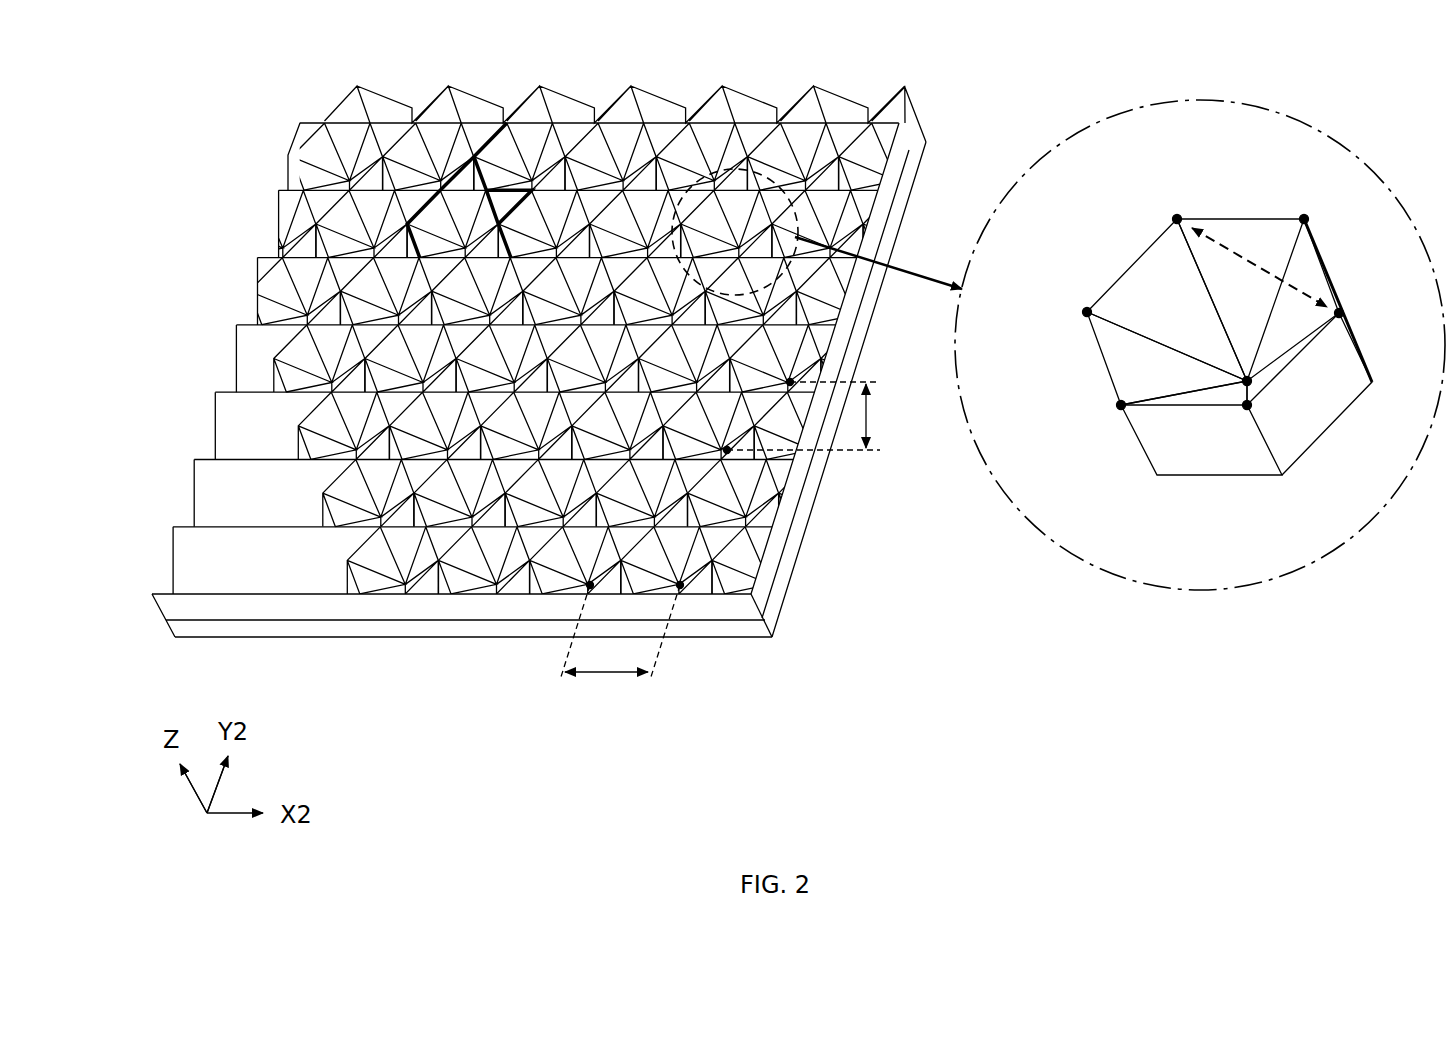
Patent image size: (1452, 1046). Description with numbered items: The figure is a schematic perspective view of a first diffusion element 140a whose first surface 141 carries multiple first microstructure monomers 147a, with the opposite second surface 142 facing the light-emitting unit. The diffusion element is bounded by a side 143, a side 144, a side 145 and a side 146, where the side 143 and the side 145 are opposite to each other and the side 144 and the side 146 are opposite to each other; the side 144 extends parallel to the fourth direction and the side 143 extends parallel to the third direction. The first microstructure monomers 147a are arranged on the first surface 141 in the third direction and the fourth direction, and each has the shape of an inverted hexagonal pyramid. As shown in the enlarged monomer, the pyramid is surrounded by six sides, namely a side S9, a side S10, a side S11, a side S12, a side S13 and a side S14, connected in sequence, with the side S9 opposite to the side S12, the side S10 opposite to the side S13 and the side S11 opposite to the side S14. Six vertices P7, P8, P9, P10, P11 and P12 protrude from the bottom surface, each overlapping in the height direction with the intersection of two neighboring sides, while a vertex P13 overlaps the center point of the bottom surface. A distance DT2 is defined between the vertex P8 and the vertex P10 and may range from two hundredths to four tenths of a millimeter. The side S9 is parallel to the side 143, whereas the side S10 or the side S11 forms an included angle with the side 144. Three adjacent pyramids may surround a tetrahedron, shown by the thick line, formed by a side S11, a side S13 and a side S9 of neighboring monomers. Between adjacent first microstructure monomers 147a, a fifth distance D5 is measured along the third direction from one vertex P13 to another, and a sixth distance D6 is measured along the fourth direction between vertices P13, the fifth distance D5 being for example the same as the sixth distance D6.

The side 145 is at (519, 372).
The side 146 is at (238, 240).
The first surface 141 is at (214, 612).
The first diffusion element 140a is at (182, 629).
The second surface 142 is at (208, 640).
The side 143 is at (468, 630).
The side 144 is at (818, 487).
The fifth distance D5 is at (622, 647).
The sixth distance D6 is at (821, 416).
The first microstructure monomer 147a is at (1200, 345).
The vertex P7 is at (1258, 402).
The vertex P8 is at (1339, 327).
The vertex P9 is at (1306, 206).
The vertex P10 is at (1175, 206).
The vertex P11 is at (1078, 304).
The vertex P12 is at (1113, 415).
The vertex P13 is at (1238, 398).
The side S9 is at (1228, 402).
The side S10 is at (1296, 374).
The side S11 is at (1346, 306).
The side S12 is at (1233, 206).
The side S13 is at (1120, 250).
The side S14 is at (1080, 368).
The distance DT2 is at (1312, 286).